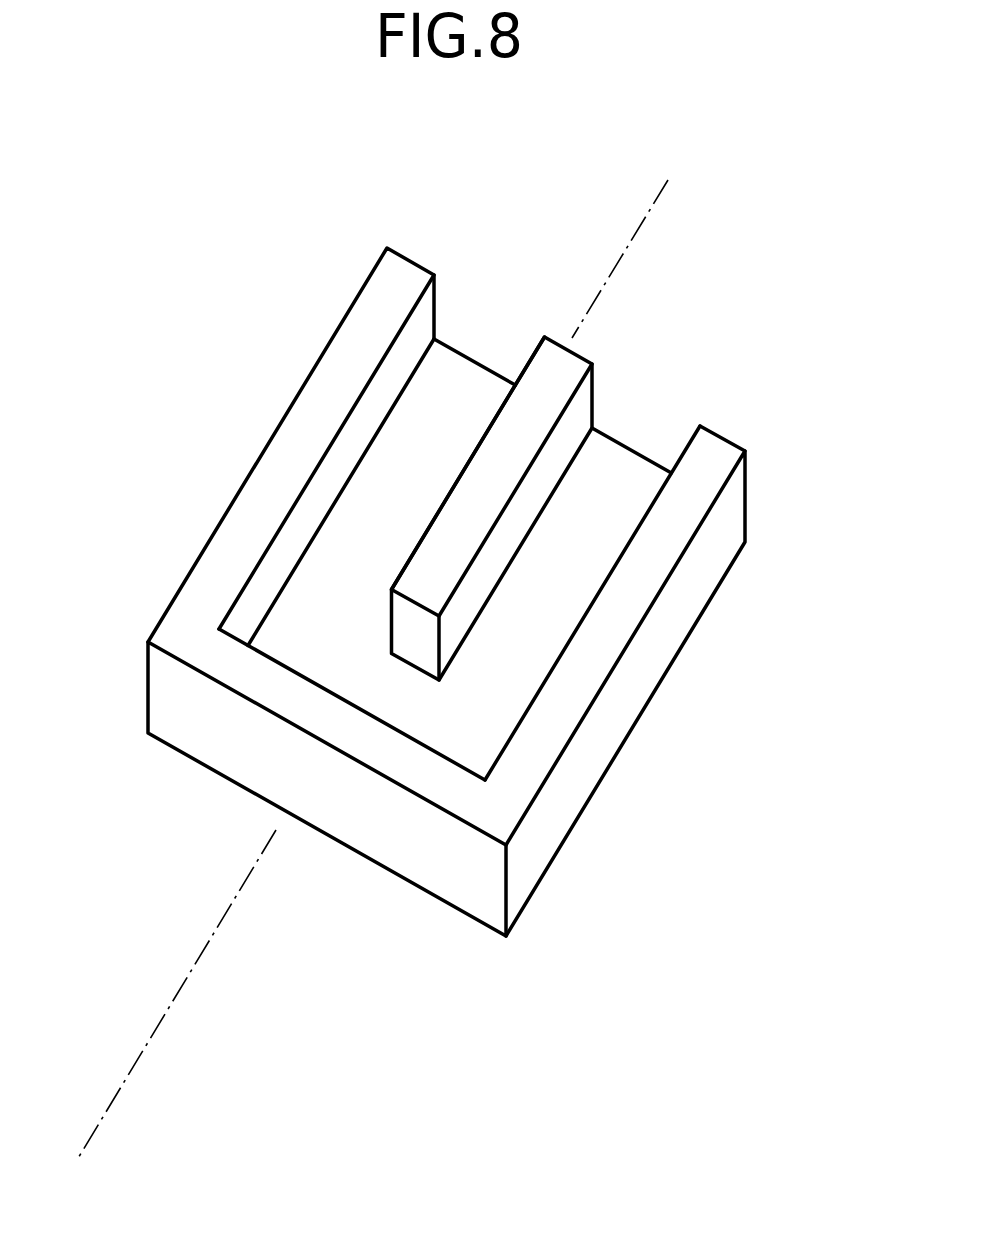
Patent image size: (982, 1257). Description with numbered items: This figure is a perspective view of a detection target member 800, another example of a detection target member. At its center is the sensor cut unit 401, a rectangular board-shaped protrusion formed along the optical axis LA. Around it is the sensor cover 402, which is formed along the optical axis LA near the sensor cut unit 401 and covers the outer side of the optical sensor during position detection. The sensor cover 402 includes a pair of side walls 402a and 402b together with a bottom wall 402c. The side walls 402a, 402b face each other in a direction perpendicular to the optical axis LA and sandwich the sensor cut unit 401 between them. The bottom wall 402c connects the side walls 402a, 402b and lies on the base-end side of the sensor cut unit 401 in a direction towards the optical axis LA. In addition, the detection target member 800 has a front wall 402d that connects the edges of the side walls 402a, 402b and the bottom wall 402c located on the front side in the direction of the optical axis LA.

The detection target member 800 is at (293, 269).
The optical axis LA is at (642, 222).
The sensor cut unit 401 is at (552, 370).
The sensor cover 402 is at (592, 802).
The side wall 402a is at (222, 560).
The side wall 402b is at (603, 640).
The bottom wall 402c is at (628, 473).
The front wall 402d is at (425, 848).